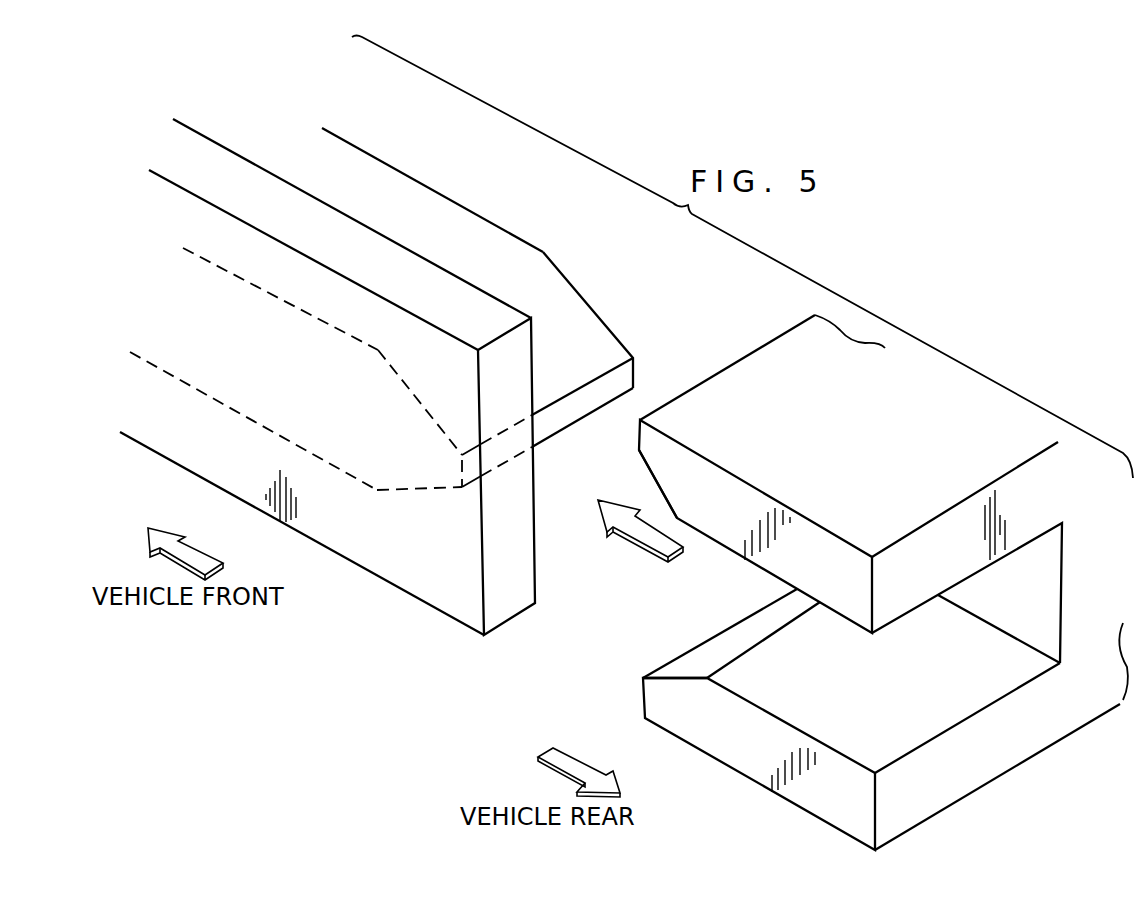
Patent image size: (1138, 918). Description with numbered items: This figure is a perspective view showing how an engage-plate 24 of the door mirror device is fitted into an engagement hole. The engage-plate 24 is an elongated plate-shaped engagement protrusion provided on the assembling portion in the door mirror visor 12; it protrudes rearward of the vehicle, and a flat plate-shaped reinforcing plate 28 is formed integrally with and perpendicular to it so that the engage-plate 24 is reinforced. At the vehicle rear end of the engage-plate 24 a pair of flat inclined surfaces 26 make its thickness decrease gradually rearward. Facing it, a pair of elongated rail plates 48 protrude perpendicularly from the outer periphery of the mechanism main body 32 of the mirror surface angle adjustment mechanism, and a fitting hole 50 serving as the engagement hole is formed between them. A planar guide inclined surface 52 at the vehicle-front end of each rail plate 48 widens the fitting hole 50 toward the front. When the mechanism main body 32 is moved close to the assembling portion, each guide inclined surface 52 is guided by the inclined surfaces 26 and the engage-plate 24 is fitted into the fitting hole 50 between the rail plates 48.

The door mirror visor 12 is at (383, 334).
The engage-plate 24 is at (383, 334).
The inclined surface 26 is at (585, 320).
The reinforcing plate 28 is at (238, 152).
The mechanism main body 32 is at (829, 574).
The rail plate 48 is at (733, 382).
The fitting hole 50 is at (898, 688).
The guide inclined surface 52 is at (652, 482).